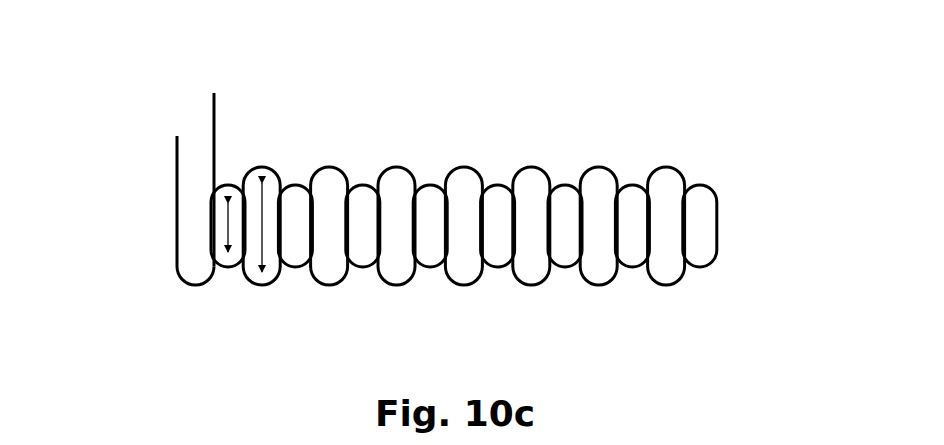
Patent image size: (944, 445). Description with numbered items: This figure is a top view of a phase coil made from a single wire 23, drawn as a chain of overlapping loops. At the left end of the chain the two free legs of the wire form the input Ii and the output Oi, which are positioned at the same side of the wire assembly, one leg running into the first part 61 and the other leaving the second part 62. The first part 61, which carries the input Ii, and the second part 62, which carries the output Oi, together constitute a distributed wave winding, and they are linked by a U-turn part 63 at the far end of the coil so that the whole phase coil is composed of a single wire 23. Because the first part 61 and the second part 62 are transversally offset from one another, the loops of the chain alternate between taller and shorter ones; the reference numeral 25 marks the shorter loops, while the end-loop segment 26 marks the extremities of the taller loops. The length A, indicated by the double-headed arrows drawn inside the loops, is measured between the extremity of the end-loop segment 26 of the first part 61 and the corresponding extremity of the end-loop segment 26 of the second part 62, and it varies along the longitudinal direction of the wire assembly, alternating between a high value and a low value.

The single wire 23 is at (517, 214).
The small loop portion 25 is at (717, 213).
The end-loop segment 26 is at (470, 167).
The first part 61 is at (310, 285).
The second part 62 is at (350, 162).
The U-turn part 63 is at (718, 183).
The length A is at (268, 213).
The input Ii is at (177, 150).
The output Oi is at (214, 110).